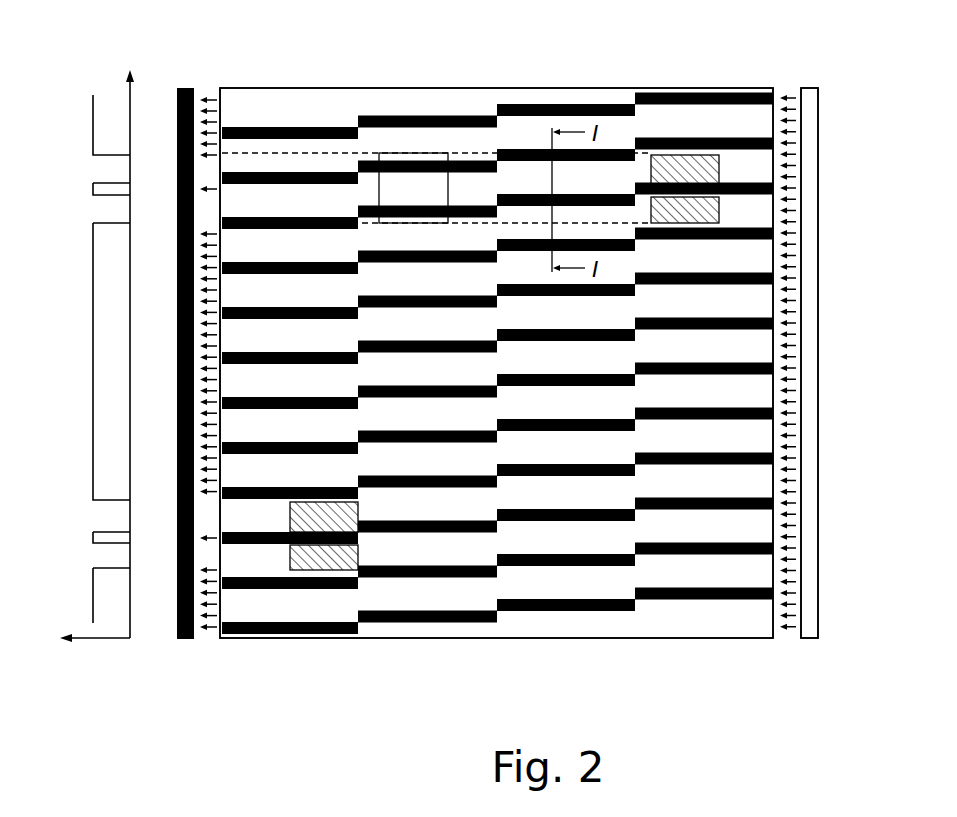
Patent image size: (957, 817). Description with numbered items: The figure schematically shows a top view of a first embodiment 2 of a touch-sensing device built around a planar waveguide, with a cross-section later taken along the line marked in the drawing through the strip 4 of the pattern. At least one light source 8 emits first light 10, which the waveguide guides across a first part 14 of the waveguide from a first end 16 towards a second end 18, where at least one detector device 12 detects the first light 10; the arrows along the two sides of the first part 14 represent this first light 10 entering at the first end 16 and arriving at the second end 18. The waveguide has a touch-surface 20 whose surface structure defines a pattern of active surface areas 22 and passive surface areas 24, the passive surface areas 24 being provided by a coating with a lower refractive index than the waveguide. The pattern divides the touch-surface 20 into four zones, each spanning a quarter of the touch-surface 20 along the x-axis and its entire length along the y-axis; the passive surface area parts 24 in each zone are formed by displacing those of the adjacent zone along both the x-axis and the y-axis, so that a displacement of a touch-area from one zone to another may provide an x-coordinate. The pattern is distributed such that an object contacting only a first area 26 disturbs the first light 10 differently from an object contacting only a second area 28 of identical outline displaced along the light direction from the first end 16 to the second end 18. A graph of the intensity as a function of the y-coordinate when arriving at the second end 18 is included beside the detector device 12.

The first embodiment 2 is at (415, 48).
The electrode strip 4 is at (548, 150).
The light source 8 is at (810, 250).
The first light 10 is at (207, 98).
The detector device 12 is at (176, 636).
The first part 14 is at (576, 622).
The first end 16 is at (768, 350).
The second end 18 is at (180, 349).
The touch-surface 20 is at (497, 354).
The active surface areas 22 is at (484, 600).
The passive surface areas 24 is at (370, 623).
The first area 26 is at (697, 172).
The second area 28 is at (436, 188).